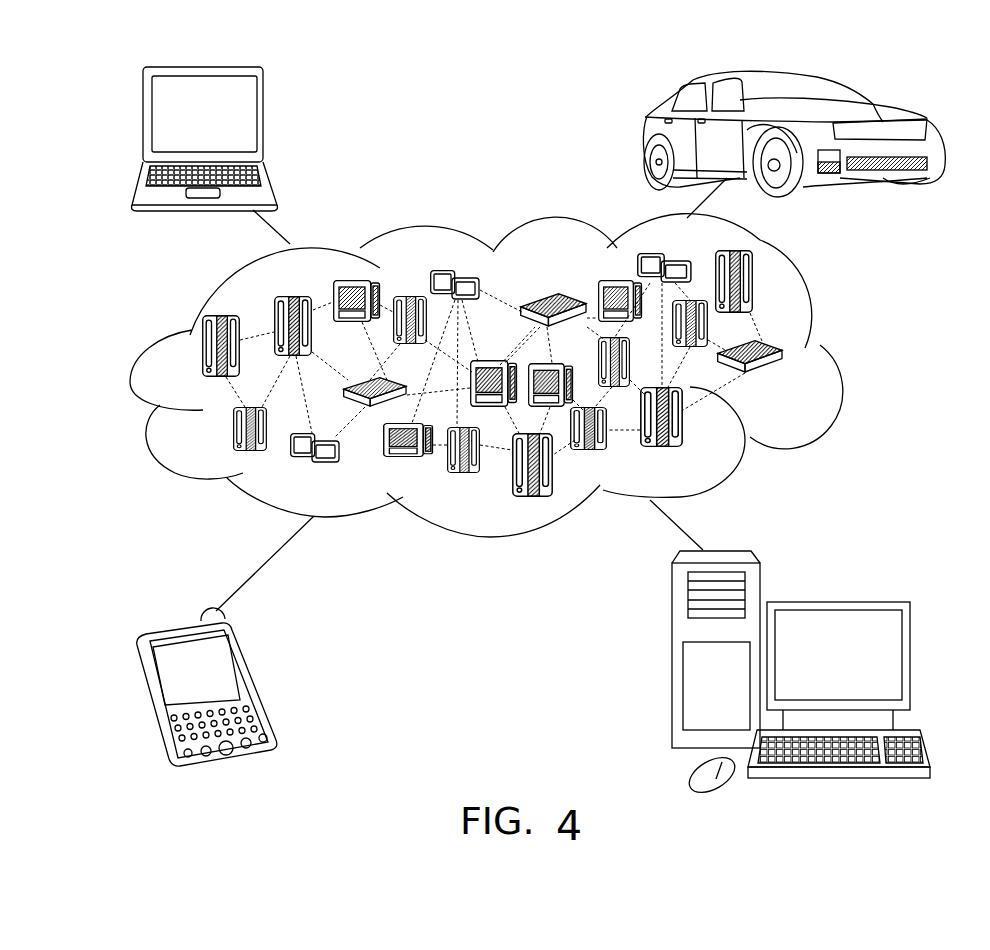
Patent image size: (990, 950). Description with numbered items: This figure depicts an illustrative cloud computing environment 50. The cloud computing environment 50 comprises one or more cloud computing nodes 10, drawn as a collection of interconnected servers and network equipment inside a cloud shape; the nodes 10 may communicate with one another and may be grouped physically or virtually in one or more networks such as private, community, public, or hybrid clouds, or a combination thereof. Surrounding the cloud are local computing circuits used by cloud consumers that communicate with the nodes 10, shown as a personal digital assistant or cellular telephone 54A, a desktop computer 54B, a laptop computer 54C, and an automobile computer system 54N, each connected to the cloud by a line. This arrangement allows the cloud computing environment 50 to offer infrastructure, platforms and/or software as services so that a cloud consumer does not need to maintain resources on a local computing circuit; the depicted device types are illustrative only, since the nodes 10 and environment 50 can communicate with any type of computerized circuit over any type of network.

The cloud computing nodes 10 is at (787, 380).
The cloud computing environment 50 is at (837, 357).
The personal digital assistant (PDA) or cellular telephone 54A is at (253, 681).
The desktop computer 54B is at (836, 600).
The laptop computer 54C is at (266, 123).
The automobile computer system 54N is at (645, 133).